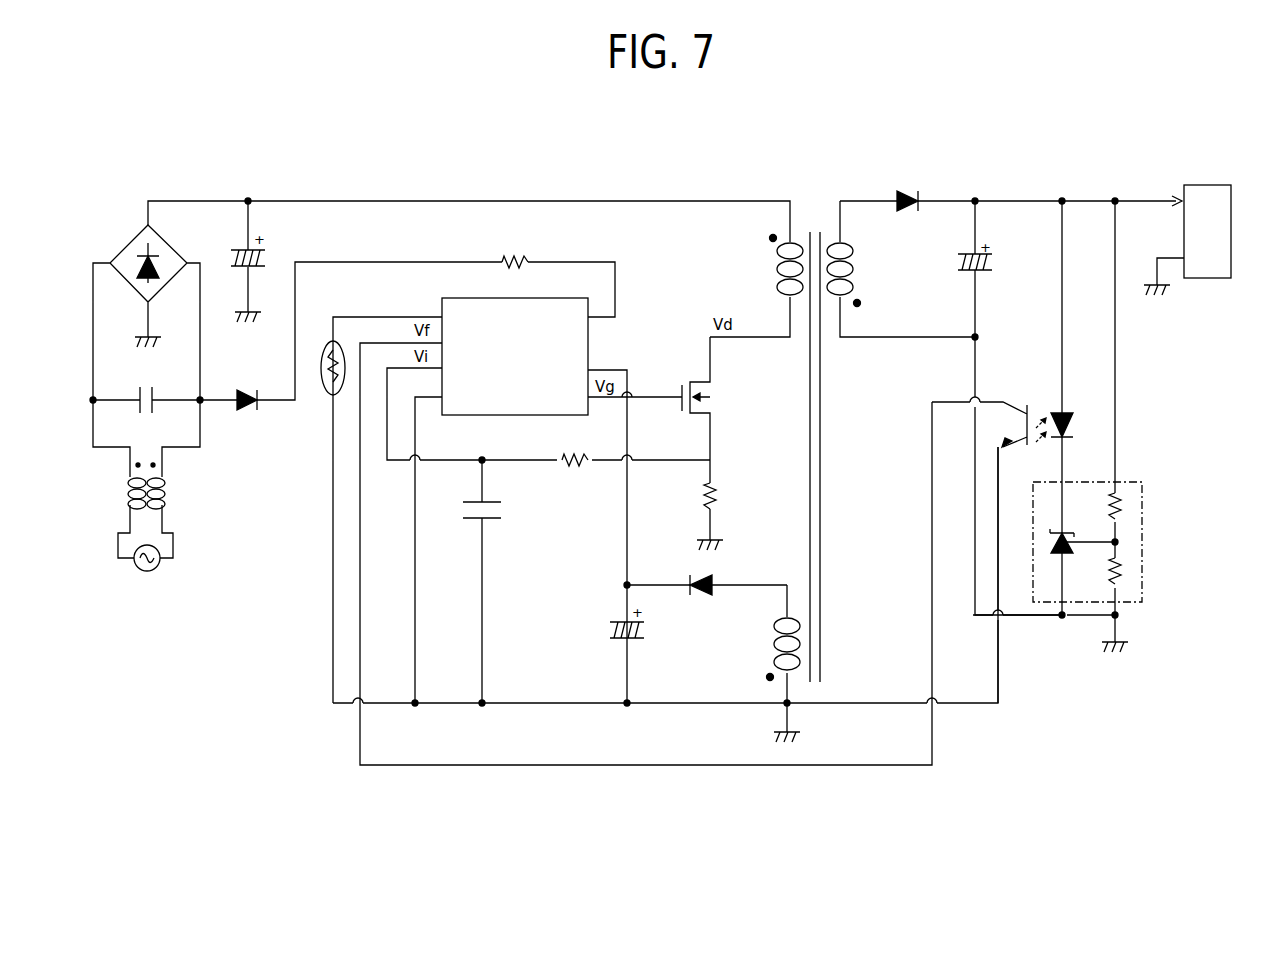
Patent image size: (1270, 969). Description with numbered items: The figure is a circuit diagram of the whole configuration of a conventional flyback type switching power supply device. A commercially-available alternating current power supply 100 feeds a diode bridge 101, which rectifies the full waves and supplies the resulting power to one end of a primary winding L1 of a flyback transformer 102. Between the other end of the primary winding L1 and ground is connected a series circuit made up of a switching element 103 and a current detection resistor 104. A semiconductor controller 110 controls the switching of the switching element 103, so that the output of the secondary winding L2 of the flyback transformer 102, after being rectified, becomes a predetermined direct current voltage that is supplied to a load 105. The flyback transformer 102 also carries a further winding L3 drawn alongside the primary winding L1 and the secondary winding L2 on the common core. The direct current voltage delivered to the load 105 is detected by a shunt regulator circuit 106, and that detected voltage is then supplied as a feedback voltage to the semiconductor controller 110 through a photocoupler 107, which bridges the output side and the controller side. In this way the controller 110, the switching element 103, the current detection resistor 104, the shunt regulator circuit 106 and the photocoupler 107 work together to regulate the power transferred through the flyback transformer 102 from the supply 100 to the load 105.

The alternating current power supply 100 is at (157, 571).
The diode bridge 101 is at (170, 241).
The flyback transformer 102 is at (842, 435).
The switching element 103 is at (694, 381).
The current detection resistor 104 is at (720, 492).
The load 105 is at (1207, 185).
The shunt regulator circuit 106 is at (1129, 482).
The photocoupler 107 is at (1033, 400).
The semiconductor controller 110 is at (518, 298).
The primary winding L1 is at (774, 264).
The secondary winding L2 is at (856, 268).
The auxiliary winding L3 is at (797, 615).